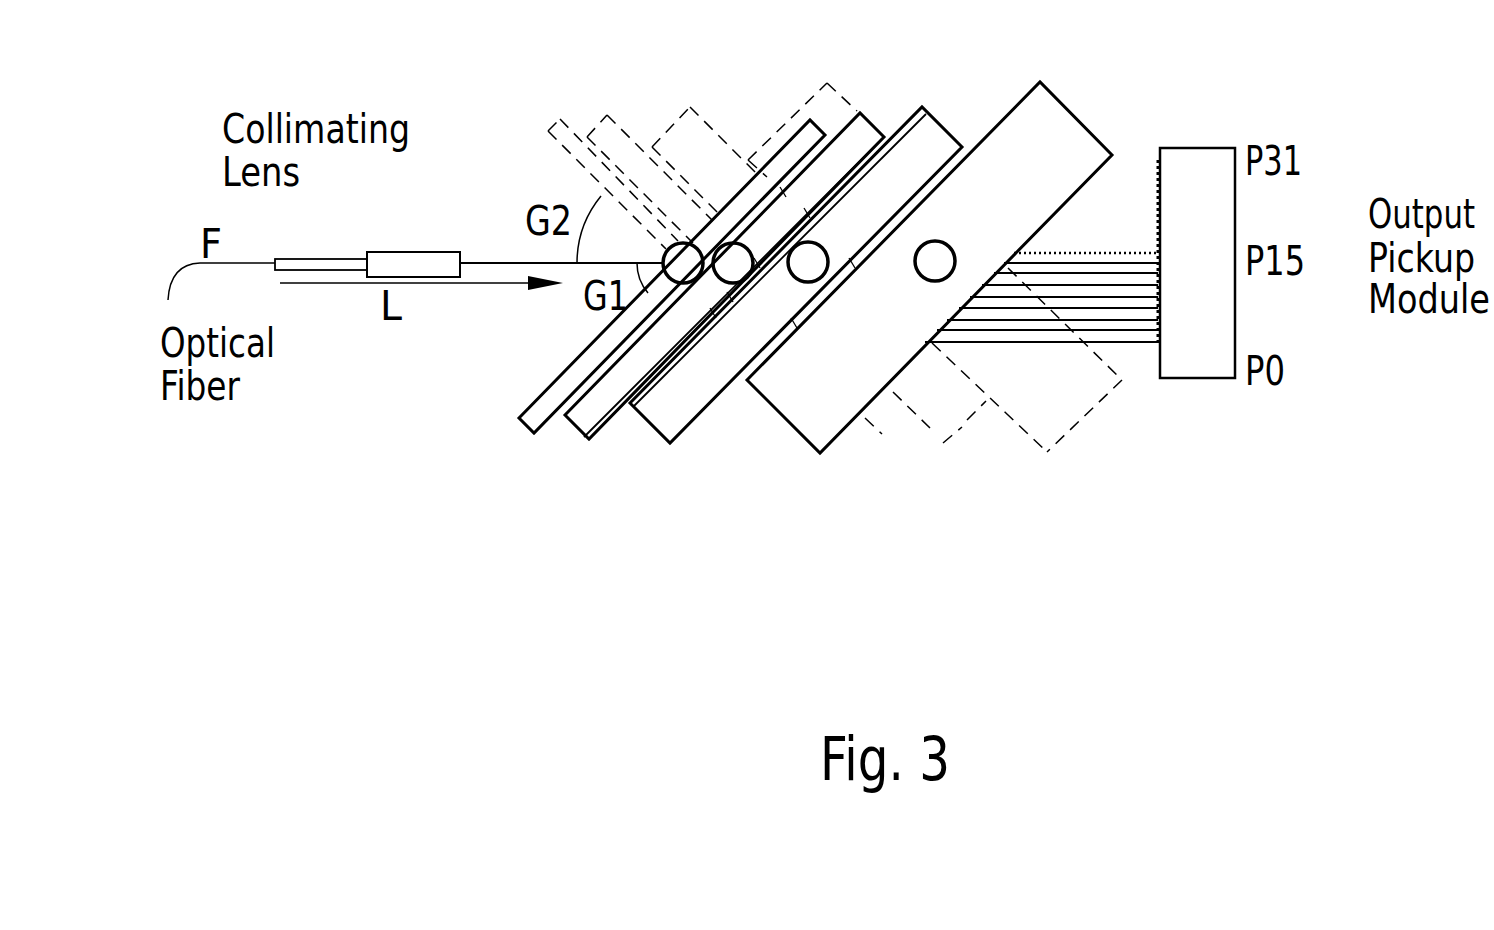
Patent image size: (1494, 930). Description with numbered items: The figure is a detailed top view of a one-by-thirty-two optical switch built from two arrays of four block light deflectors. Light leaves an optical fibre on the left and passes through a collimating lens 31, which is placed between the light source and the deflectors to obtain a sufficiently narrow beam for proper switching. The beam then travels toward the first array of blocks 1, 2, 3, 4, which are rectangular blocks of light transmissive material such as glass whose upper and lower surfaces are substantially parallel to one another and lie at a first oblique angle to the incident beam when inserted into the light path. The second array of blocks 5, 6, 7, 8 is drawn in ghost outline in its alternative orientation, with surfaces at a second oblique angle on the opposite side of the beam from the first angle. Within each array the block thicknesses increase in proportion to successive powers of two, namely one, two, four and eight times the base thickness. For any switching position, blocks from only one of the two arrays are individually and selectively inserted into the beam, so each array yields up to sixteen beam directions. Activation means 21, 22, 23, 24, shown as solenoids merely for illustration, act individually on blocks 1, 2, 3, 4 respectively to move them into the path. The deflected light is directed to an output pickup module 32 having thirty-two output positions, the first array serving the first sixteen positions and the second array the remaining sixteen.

The light deflector block 1 is at (672, 219).
The light deflector block 2 is at (730, 222).
The light deflector block 3 is at (825, 224).
The light deflector block 4 is at (951, 229).
The light deflector block 5 is at (555, 162).
The light deflector block 6 is at (611, 146).
The light deflector block 7 is at (675, 133).
The light deflector block 8 is at (773, 113).
The activation means 21 is at (611, 393).
The activation means 22 is at (709, 401).
The activation means 23 is at (833, 403).
The activation means 24 is at (972, 390).
The collimating lens 31 is at (367, 214).
The output pickup module 32 is at (1241, 211).